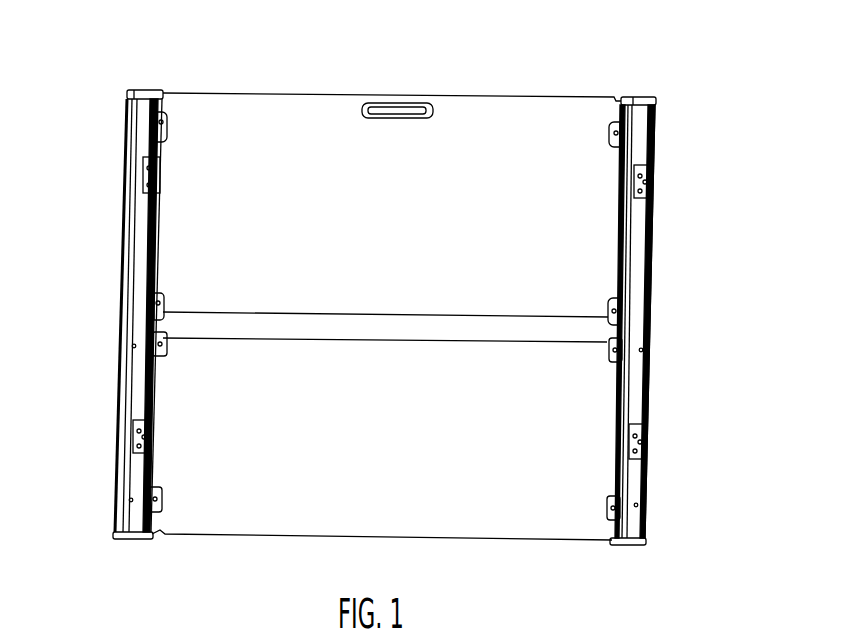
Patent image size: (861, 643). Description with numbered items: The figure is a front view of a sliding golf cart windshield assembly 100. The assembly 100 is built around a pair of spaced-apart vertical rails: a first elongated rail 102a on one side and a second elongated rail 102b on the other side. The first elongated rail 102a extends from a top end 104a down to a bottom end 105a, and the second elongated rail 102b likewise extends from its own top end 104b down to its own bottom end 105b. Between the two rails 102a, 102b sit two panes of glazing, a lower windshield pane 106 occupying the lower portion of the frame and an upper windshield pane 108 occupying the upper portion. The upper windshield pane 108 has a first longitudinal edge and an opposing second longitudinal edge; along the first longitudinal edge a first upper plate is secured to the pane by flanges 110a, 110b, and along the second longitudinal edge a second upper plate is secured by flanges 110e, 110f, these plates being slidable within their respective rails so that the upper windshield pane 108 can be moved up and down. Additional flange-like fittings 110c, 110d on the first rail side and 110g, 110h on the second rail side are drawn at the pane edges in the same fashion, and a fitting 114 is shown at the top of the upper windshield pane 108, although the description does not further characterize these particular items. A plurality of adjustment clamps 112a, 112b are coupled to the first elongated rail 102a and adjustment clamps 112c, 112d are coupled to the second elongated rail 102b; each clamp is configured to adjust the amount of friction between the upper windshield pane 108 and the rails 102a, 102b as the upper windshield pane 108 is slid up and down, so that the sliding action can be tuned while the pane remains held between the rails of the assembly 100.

The sliding golf cart windshield assembly 100 is at (724, 74).
The first elongated rail 102a is at (145, 258).
The second elongated rail 102b is at (643, 275).
The top end 104a is at (145, 91).
The top end 104b is at (640, 97).
The bottom end 105a is at (130, 540).
The bottom end 105b is at (632, 546).
The lower windshield pane 106 is at (500, 523).
The upper windshield pane 108 is at (513, 118).
The flange 110a is at (163, 128).
The flange 110b is at (160, 300).
The bracket 110c is at (165, 352).
The bracket 110d is at (160, 490).
The flange 110e is at (612, 140).
The flange 110f is at (610, 305).
The bracket 110g is at (610, 356).
The bracket 110h is at (607, 502).
The adjustment clamp 112a is at (158, 178).
The adjustment clamp 112b is at (150, 428).
The adjustment clamp 112c is at (650, 178).
The adjustment clamp 112d is at (645, 435).
The handle 114 is at (387, 103).